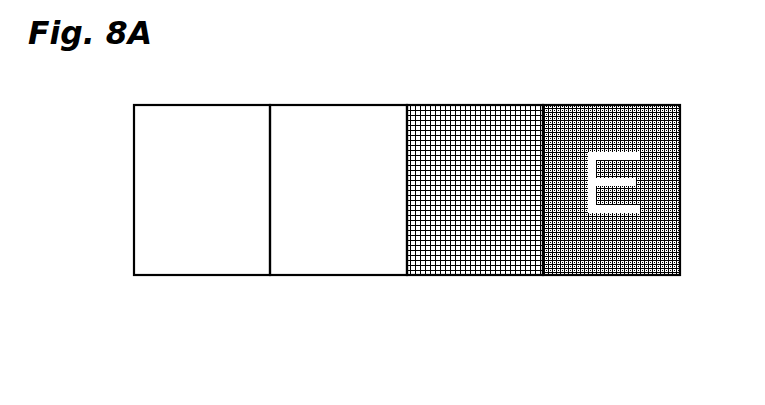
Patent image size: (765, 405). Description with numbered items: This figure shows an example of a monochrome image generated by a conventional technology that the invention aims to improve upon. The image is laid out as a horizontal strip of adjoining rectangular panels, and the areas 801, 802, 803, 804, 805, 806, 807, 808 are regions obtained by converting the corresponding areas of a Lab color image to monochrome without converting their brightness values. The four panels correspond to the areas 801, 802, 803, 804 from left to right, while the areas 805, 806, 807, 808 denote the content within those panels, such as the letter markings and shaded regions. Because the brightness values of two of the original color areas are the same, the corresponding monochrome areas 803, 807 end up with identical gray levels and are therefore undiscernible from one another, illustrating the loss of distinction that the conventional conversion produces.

The area 801 is at (215, 117).
The area 802 is at (362, 115).
The area 803 is at (498, 115).
The area 804 is at (630, 201).
The area 805 is at (203, 213).
The area 806 is at (310, 208).
The area 807 is at (472, 213).
The area 808 is at (618, 213).